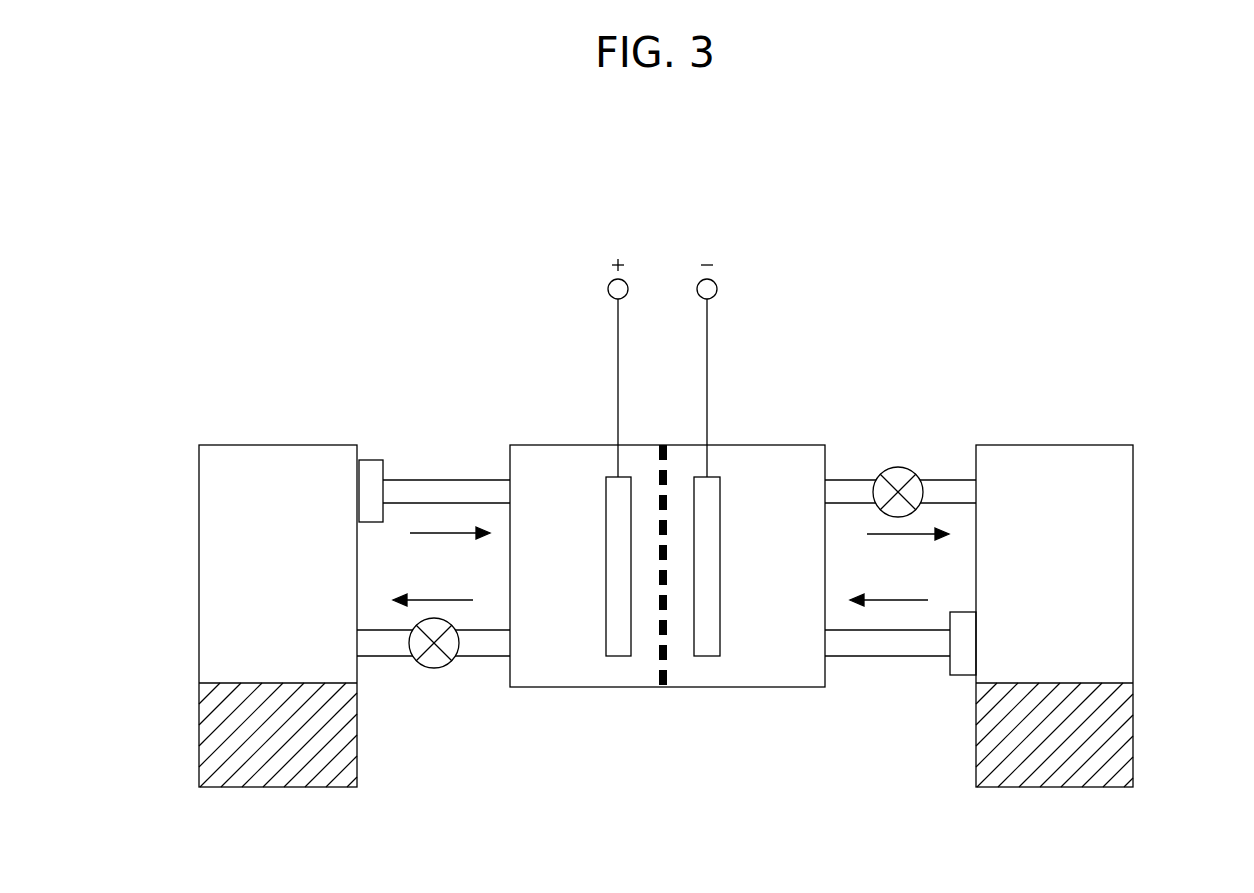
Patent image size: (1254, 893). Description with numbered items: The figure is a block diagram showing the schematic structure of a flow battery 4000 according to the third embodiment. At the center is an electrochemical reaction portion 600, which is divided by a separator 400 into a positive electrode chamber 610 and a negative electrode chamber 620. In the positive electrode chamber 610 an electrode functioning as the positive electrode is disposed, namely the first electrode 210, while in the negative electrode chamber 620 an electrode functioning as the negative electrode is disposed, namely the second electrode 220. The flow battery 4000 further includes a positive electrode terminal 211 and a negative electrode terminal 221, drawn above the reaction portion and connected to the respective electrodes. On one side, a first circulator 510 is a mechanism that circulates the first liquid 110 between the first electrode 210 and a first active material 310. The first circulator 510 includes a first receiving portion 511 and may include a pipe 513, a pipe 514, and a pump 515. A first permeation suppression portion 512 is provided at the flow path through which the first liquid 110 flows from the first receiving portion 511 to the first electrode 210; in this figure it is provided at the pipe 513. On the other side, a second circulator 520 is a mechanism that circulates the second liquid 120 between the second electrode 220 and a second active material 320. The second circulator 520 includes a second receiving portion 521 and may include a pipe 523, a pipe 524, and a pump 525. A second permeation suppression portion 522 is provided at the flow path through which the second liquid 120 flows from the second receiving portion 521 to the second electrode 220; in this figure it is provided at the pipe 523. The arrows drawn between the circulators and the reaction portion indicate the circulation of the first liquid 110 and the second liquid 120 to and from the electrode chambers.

The flow battery 4000 is at (688, 186).
The first liquid 110 is at (422, 537).
The second liquid 120 is at (879, 537).
The first electrode 210 is at (618, 650).
The second electrode 220 is at (706, 650).
The positive electrode terminal 211 is at (607, 290).
The negative electrode terminal 221 is at (718, 290).
The first active material 310 is at (218, 712).
The second active material 320 is at (1122, 714).
The separator 400 is at (662, 445).
The first circulator 510 is at (312, 410).
The first receiving portion 511 is at (213, 482).
The first permeation suppression portion 512 is at (367, 470).
The pipe 513 is at (442, 490).
The pipe 514 is at (484, 662).
The pump 515 is at (430, 668).
The second circulator 520 is at (1028, 410).
The second receiving portion 521 is at (1110, 478).
The second permeation suppression portion 522 is at (962, 676).
The pipe 523 is at (882, 657).
The pipe 524 is at (846, 488).
The pump 525 is at (898, 467).
The electrochemical reaction portion 600 is at (780, 687).
The positive electrode chamber 610 is at (541, 468).
The negative electrode chamber 620 is at (771, 468).